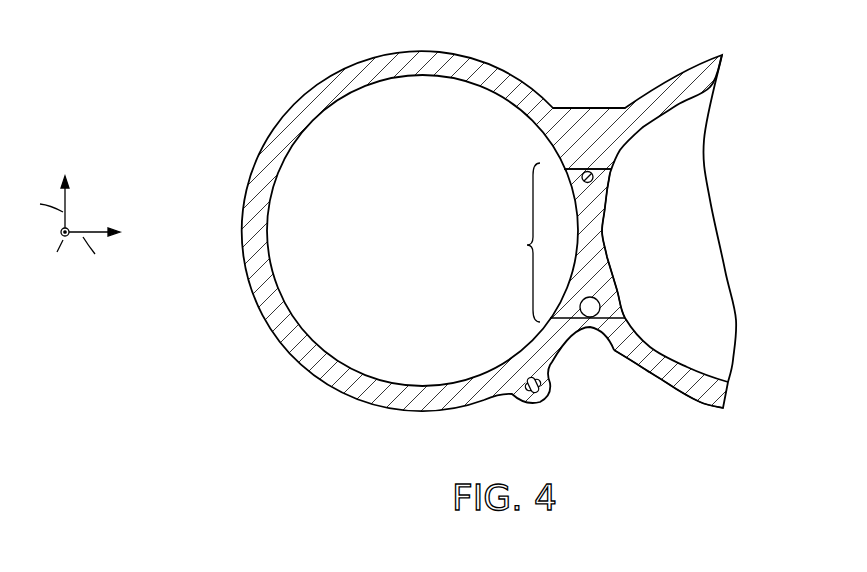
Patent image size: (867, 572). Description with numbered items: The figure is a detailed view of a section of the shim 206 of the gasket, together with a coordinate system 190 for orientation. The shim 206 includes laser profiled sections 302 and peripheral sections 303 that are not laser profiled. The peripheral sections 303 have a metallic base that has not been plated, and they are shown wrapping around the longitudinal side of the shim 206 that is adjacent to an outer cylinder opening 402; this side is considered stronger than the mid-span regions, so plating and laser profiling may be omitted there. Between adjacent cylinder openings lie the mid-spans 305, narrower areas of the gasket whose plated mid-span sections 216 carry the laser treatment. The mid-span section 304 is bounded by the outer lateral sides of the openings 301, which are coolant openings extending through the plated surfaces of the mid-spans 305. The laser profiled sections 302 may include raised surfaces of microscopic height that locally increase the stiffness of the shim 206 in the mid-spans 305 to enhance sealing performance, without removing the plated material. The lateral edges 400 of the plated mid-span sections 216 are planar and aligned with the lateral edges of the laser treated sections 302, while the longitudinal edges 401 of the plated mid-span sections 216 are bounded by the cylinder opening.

The shim 206 is at (195, 67).
The coordinate system 190 is at (101, 206).
The peripheral sections 303 is at (614, 81).
The mid-spans 305 is at (676, 257).
The outer cylinder opening 402 is at (428, 223).
The laser profiled sections 302 is at (596, 242).
The lateral edges 400 is at (598, 172).
The longitudinal edges 401 is at (574, 266).
The openings 301 is at (592, 180).
The plated mid-span sections 216 is at (604, 212).
The mid-span section 304 is at (514, 242).